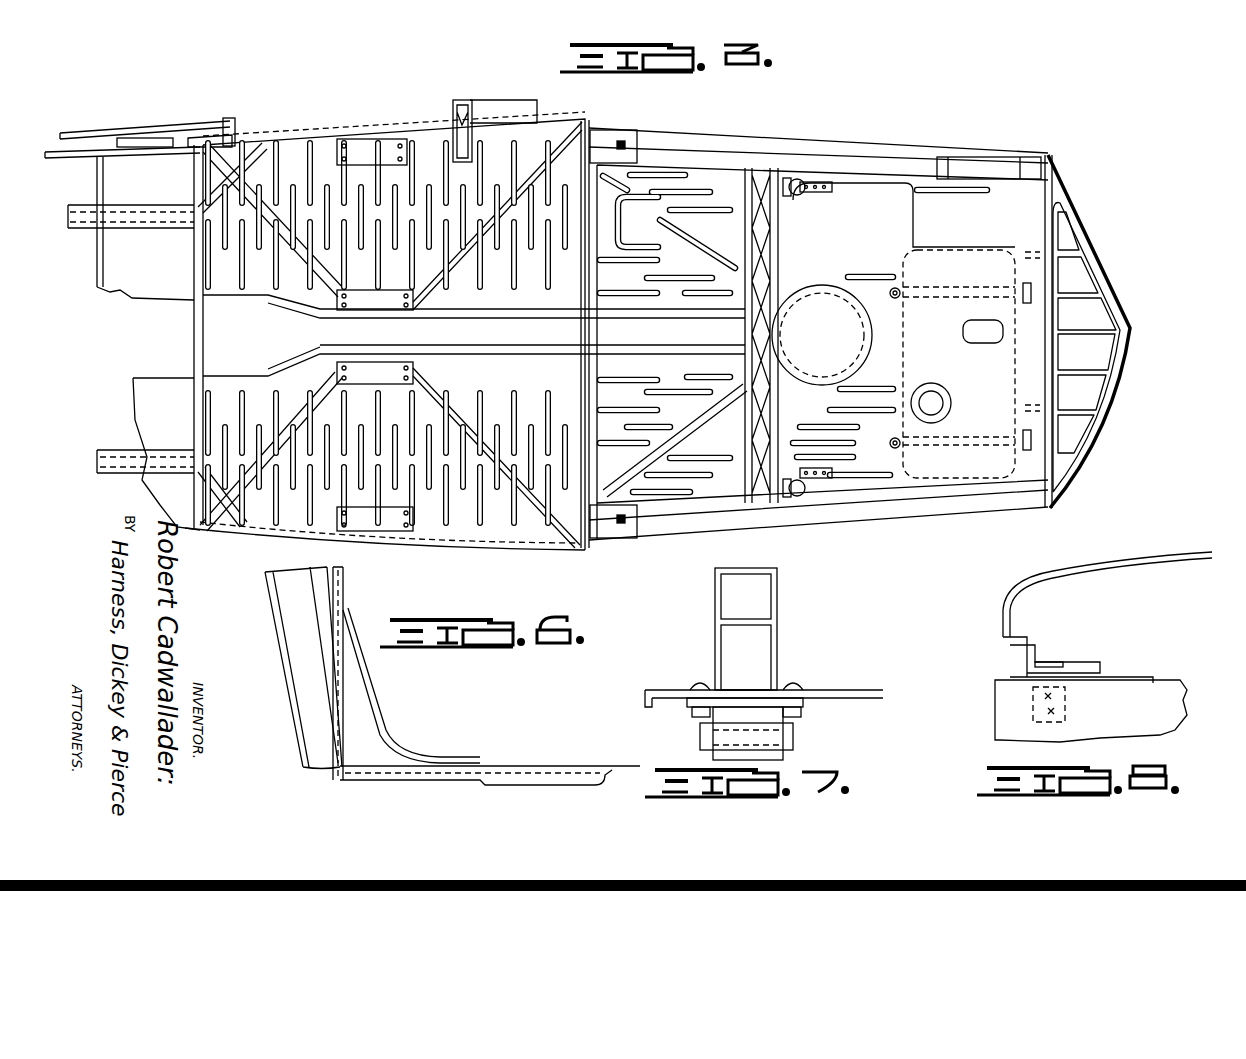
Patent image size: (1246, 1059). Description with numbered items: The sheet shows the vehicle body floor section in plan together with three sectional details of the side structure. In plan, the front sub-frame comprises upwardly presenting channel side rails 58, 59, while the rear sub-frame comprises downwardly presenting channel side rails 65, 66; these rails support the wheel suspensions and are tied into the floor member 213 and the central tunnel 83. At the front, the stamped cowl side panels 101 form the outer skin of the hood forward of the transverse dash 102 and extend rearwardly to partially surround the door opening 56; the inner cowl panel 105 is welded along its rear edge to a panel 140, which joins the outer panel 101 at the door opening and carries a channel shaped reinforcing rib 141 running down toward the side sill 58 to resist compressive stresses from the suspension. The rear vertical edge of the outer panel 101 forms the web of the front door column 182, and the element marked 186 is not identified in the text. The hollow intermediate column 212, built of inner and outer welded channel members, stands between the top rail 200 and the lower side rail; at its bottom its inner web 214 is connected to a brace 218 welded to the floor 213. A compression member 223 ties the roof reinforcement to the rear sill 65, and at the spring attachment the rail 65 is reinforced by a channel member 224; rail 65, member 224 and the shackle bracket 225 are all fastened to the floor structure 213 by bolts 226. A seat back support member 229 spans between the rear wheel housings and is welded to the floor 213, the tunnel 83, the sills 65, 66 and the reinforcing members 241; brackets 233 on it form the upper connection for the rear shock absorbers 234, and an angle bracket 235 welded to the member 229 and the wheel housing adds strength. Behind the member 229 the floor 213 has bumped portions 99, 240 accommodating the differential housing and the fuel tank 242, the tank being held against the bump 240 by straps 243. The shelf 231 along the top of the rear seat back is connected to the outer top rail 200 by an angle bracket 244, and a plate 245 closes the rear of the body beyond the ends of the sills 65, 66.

In FIG. 3, the cowl side panel 101 is at (145, 118).
In FIG. 3, the transverse dash 102 is at (122, 171).
In FIG. 3, the inner cowl panel 105 is at (79, 222).
In FIG. 3, the panel 140 is at (221, 115).
In FIG. 3, the channel shaped reinforcing rib 141 is at (144, 159).
In FIG. 3, the front door column 182 is at (246, 115).
In FIG. 3, the frame side member 186 is at (148, 273).
In FIG. 3, the channel side rail 58 is at (126, 236).
In FIG. 3, the channel side rail 59 is at (146, 454).
In FIG. 3, the door opening 56 is at (394, 105).
In FIG. 3, the intermediate column 212 is at (433, 117).
In FIG. 6, the intermediate column 212 is at (277, 668).
In FIG. 3, the floor member 213 is at (649, 334).
In FIG. 6, the floor member 213 is at (490, 760).
In FIG. 7, the floor member 213 is at (769, 682).
In FIG. 3, the inner web 214 is at (531, 107).
In FIG. 6, the inner web 214 is at (371, 673).
In FIG. 3, the brace 218 is at (400, 334).
In FIG. 6, the brace 218 is at (411, 685).
In FIG. 3, the tunnel 83 is at (474, 324).
In FIG. 3, the channel side rail 65 is at (818, 320).
In FIG. 7, the channel side rail 65 is at (788, 654).
In FIG. 3, the channel side rail 66 is at (818, 522).
In FIG. 3, the seat back support member 229 is at (796, 335).
In FIG. 3, the bracket 233 is at (782, 304).
In FIG. 3, the rear shock absorber 234 is at (832, 300).
In FIG. 3, the angle bracket 235 is at (904, 215).
In FIG. 3, the bumped portion 99 is at (822, 335).
In FIG. 3, the compression member 223 is at (989, 151).
In FIG. 8, the compression member 223 is at (1081, 652).
In FIG. 3, the reinforcing member 241 is at (950, 311).
In FIG. 3, the bumped portion 240 is at (971, 347).
In FIG. 3, the strap 243 is at (923, 312).
In FIG. 3, the fuel tank 242 is at (891, 409).
In FIG. 3, the plate 245 is at (1100, 331).
In FIG. 7, the reinforcing member 224 is at (791, 629).
In FIG. 7, the bolt 226 is at (711, 687).
In FIG. 7, the shackle bracket 225 is at (713, 733).
In FIG. 8, the top rail 200 is at (1080, 594).
In FIG. 8, the angle bracket 244 is at (1052, 647).
In FIG. 8, the shelf 231 is at (1091, 696).